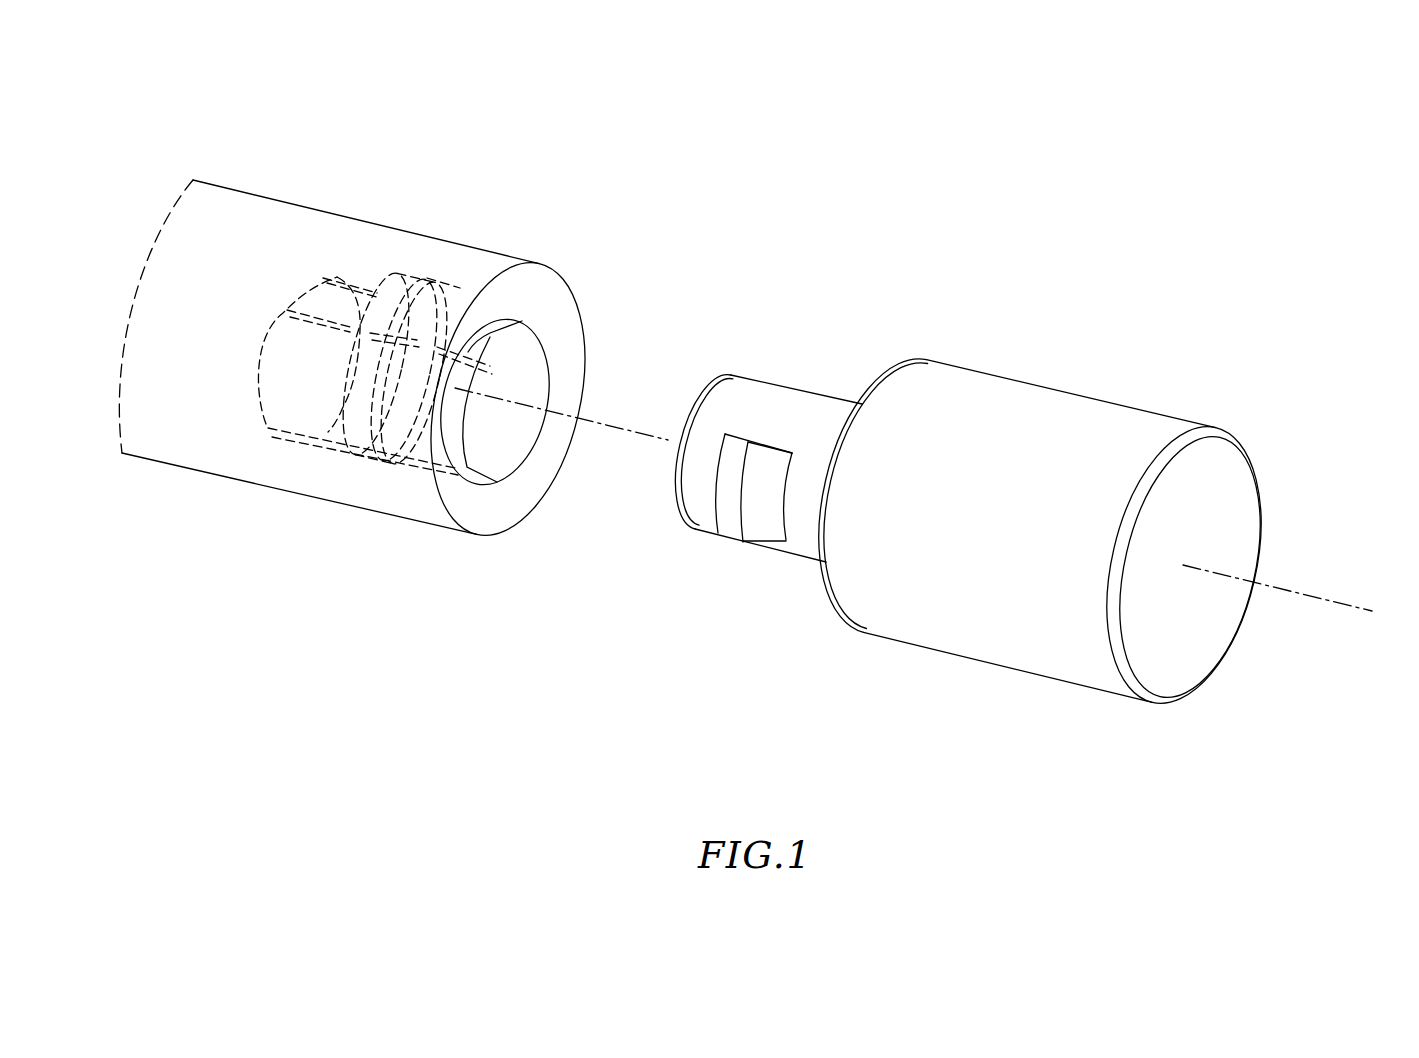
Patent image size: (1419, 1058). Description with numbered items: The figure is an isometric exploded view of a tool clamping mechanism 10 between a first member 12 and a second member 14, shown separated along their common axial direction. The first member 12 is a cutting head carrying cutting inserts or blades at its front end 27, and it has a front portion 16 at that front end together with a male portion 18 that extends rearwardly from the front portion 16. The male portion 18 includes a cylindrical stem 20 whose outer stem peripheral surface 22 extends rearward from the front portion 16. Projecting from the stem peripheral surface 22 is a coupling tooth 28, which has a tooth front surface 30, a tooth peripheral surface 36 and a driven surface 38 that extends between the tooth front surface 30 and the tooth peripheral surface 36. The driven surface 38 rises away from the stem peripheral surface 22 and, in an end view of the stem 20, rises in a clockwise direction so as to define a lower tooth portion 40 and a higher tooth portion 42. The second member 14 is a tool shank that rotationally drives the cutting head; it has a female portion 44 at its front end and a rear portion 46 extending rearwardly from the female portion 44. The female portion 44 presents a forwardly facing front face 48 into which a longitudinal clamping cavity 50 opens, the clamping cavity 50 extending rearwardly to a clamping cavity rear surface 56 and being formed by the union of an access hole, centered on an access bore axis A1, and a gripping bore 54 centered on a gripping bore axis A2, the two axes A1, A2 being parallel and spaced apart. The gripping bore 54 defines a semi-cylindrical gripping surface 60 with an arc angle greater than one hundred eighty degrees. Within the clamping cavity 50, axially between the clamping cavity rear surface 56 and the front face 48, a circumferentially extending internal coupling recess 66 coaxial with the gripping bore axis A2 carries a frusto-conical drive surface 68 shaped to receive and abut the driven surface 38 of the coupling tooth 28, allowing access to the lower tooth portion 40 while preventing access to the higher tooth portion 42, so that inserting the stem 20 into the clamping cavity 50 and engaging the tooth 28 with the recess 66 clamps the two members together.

The tool clamping mechanism 10 is at (807, 200).
The first member 12 is at (1084, 304).
The second member 14 is at (340, 160).
The front portion 16 is at (1142, 384).
The male portion 18 is at (848, 283).
The cylindrical stem 20 is at (786, 380).
The stem peripheral surface 22 is at (746, 403).
The front end 27 is at (1211, 618).
The coupling tooth 28 is at (747, 483).
The tooth front surface 30 is at (789, 540).
The tooth peripheral surface 36 is at (732, 517).
The driven surface 38 is at (767, 509).
The lower tooth portion 40 is at (762, 477).
The higher tooth portion 42 is at (772, 528).
The female portion 44 is at (448, 204).
The rear portion 46 is at (246, 170).
The front face 48 is at (483, 516).
The clamping cavity 50 is at (516, 450).
The gripping bore 54 is at (530, 357).
The clamping cavity rear surface 56 is at (310, 392).
The gripping surface 60 is at (532, 377).
The internal coupling recess 66 is at (378, 478).
The drive surface 68 is at (461, 296).
The access bore axis A1 is at (612, 422).
The gripping bore axis A2 is at (594, 428).